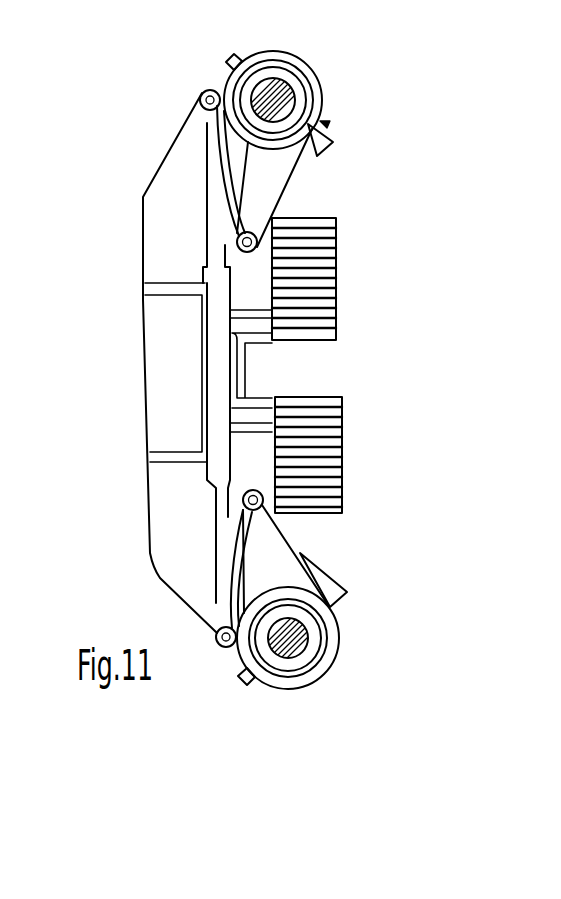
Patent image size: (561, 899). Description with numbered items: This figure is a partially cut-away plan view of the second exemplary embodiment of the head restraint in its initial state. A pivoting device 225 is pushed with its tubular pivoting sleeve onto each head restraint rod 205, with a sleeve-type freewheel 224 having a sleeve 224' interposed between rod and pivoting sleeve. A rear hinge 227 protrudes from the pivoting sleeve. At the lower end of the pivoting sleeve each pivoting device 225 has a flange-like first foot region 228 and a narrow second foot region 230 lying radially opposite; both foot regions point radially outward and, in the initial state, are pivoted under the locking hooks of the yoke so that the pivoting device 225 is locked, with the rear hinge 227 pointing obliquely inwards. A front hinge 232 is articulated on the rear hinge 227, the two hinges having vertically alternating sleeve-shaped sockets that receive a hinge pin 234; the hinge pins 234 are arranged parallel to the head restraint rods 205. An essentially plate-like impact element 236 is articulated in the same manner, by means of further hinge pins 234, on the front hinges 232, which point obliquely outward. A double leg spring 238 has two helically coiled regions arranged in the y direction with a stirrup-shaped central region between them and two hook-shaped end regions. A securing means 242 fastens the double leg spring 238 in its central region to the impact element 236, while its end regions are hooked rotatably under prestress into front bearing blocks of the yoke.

The head restraint rod 205 is at (278, 90).
The sleeve-type freewheel 224 is at (322, 89).
The sleeve 224' is at (321, 100).
The pivoting device 225 is at (326, 124).
The rear hinge 227 is at (267, 185).
The first foot region 228 is at (320, 148).
The second foot region 230 is at (227, 52).
The front hinge 232 is at (230, 153).
The hinge pin 234 is at (204, 93).
The impact element 236 is at (180, 203).
The double leg spring 238 is at (312, 313).
The securing means 242 is at (237, 370).